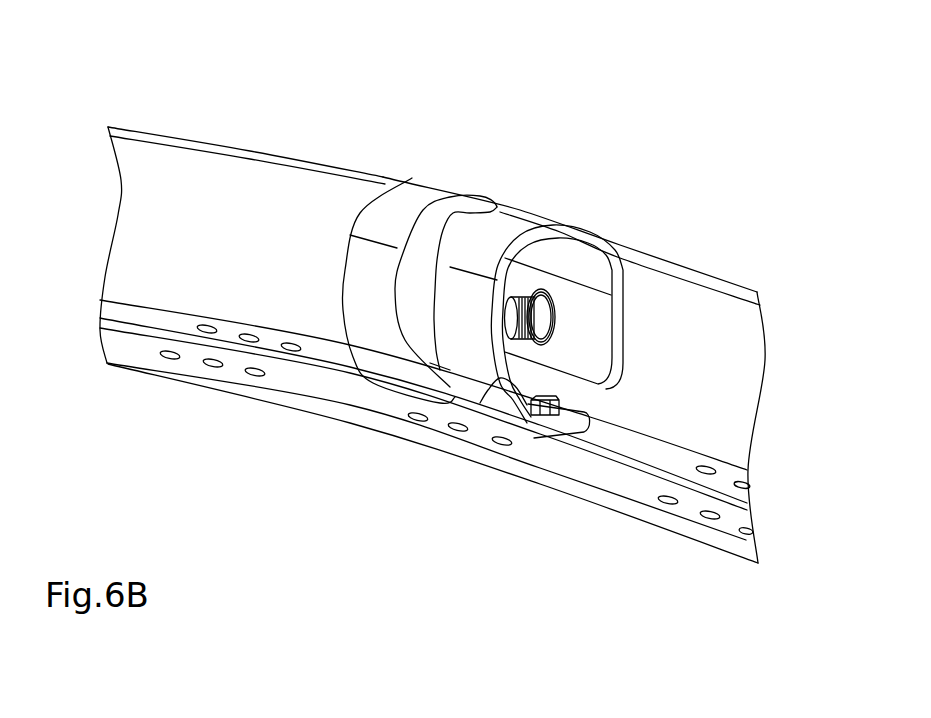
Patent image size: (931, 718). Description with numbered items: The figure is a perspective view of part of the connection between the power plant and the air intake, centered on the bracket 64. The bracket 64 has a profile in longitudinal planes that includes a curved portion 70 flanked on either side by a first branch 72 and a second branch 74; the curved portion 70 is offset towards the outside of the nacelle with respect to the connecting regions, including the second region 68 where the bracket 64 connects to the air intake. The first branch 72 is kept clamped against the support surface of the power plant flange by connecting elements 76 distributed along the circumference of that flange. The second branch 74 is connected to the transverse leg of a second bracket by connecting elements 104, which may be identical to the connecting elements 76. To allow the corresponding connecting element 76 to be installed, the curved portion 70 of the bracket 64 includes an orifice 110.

The bracket 64 is at (522, 187).
The curved portion 70 is at (428, 193).
The orifice 110 is at (458, 207).
The first branch 72 is at (623, 323).
The connecting elements 76 is at (520, 299).
The second region 68 is at (556, 297).
The connecting elements 104 is at (558, 410).
The second branch 74 is at (478, 398).